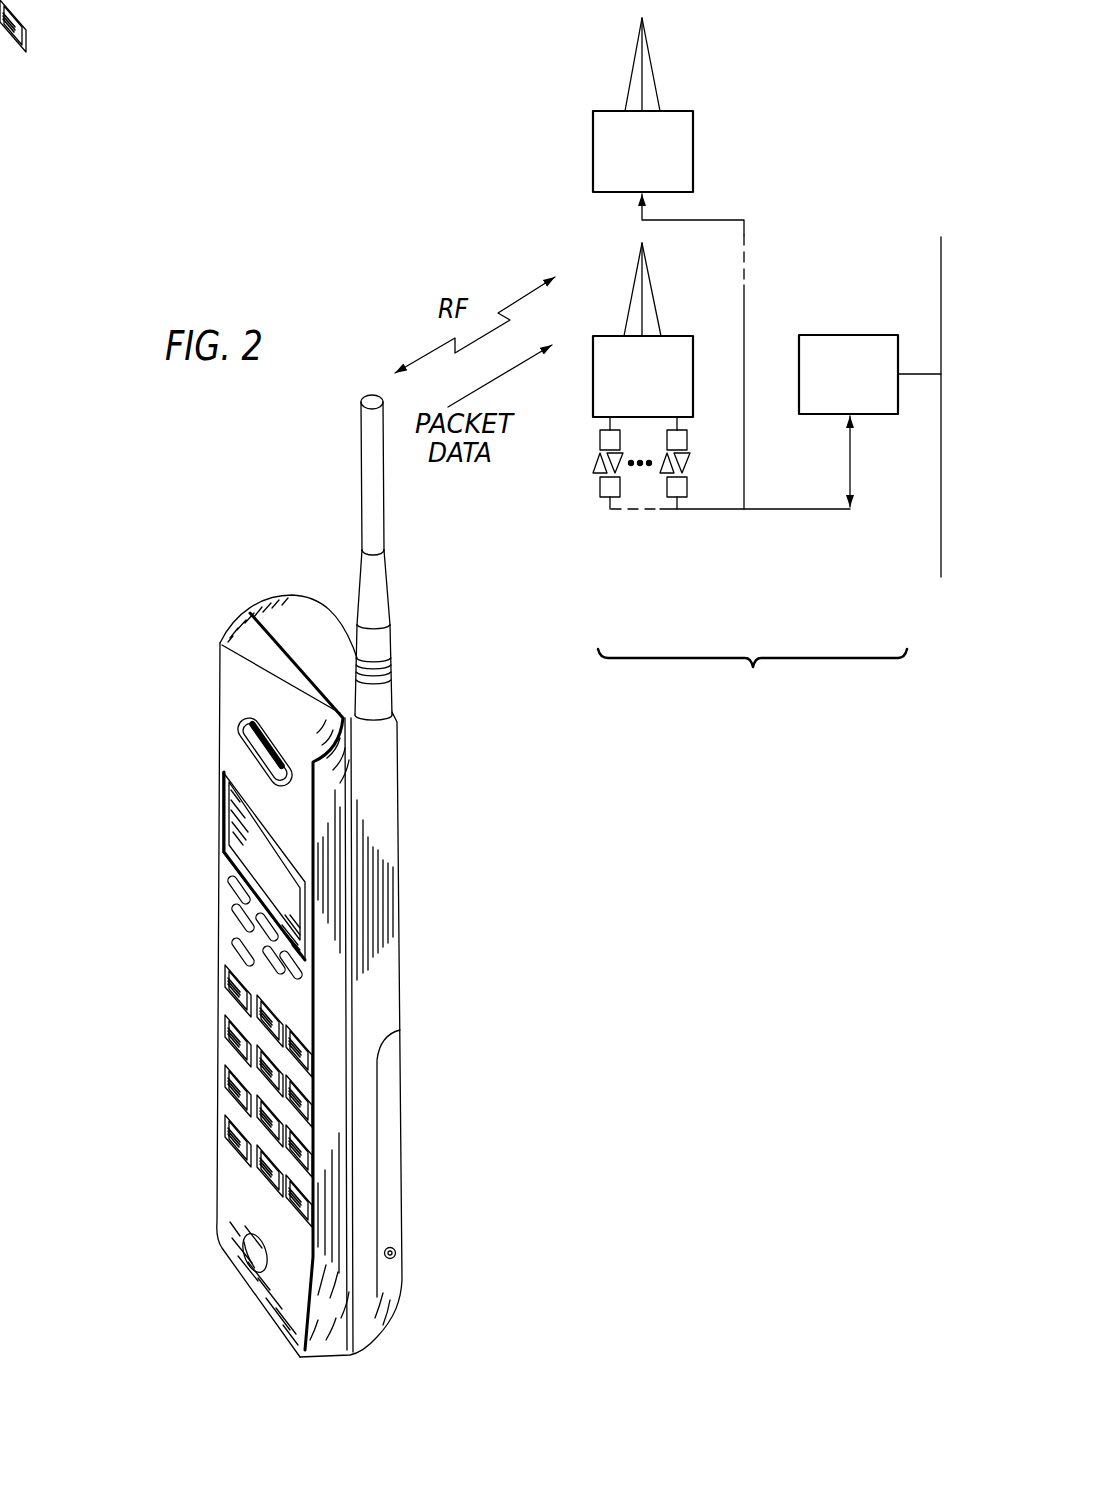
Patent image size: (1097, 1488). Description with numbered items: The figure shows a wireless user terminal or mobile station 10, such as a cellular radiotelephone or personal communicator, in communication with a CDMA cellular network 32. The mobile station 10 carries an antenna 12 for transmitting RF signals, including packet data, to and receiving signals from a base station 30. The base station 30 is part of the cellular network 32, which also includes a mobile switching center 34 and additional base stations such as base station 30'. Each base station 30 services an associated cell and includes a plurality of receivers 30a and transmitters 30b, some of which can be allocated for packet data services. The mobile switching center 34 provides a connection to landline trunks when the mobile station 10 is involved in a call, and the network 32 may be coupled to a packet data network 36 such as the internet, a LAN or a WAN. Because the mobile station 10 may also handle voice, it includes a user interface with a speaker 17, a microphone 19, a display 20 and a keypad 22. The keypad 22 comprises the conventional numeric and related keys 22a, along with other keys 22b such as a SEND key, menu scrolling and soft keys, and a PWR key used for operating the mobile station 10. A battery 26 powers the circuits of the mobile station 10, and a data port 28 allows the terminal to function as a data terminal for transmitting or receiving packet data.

The mobile station 10 is at (197, 605).
The antenna 12 is at (372, 503).
The speaker 17 is at (257, 733).
The microphone 19 is at (248, 1257).
The display 20 is at (243, 845).
The keypad 22 is at (233, 613).
The numeric and related keys 22a is at (227, 1093).
The other keys 22b is at (243, 938).
The battery 26 is at (387, 1208).
The data port 28 is at (396, 1257).
The base station 30 is at (628, 427).
The additional base station 30' is at (682, 105).
The receivers 30a is at (721, 514).
The transmitters 30b is at (555, 504).
The cellular network 32 is at (752, 677).
The mobile switching center 34 is at (838, 334).
The packet data network 36 is at (945, 553).